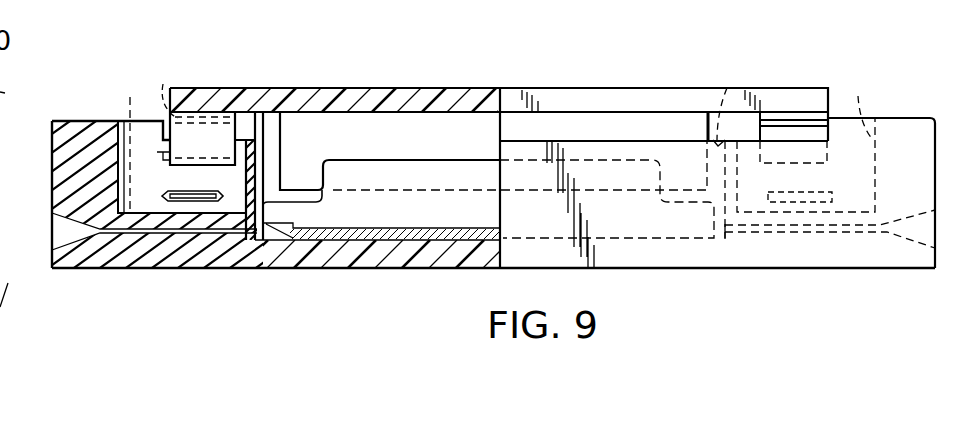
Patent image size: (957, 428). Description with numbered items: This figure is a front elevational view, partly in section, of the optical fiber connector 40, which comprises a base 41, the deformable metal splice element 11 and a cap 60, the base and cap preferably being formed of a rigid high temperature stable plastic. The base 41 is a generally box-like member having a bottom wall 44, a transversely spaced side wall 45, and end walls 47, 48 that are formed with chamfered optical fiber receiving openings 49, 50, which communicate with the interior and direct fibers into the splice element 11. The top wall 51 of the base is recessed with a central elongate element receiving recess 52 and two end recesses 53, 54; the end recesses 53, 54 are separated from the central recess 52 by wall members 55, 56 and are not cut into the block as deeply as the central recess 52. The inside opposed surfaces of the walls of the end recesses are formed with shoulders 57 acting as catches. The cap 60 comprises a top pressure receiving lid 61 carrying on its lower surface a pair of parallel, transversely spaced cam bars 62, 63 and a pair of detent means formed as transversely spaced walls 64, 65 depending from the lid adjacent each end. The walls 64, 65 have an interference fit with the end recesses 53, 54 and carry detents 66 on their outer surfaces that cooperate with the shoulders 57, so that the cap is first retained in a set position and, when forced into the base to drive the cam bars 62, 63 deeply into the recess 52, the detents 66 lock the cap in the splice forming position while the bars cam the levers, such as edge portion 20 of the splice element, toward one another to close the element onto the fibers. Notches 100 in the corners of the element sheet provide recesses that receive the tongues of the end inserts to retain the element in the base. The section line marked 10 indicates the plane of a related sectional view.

The section line 10- 10 is at (378, 88).
The splice element 11 is at (205, 335).
The edge portion 20 is at (422, 167).
The optical fiber connector 40 is at (679, 82).
The base 41 is at (884, 119).
The bottom wall 44 is at (696, 268).
The side wall 45 is at (608, 257).
The end wall 47 is at (52, 167).
The end wall 48 is at (944, 103).
The optical fiber receiving opening 49 is at (60, 246).
The optical fiber receiving opening 50 is at (908, 240).
The top wall 51 is at (78, 121).
The central elongate element receiving recess 52 is at (268, 152).
The end recess 53 is at (127, 141).
The end recess 54 is at (859, 105).
The wall member 55 is at (252, 143).
The wall member 56 is at (794, 145).
The shoulder 57 is at (163, 166).
The cap 60 is at (608, 89).
The top pressure receiving lid 61 is at (534, 86).
The cam bar 62 is at (562, 120).
The cam bar 63 is at (452, 122).
The wall 64 is at (776, 132).
The wall 65 is at (215, 133).
The detent 66 is at (818, 68).
The notch 100 is at (307, 203).